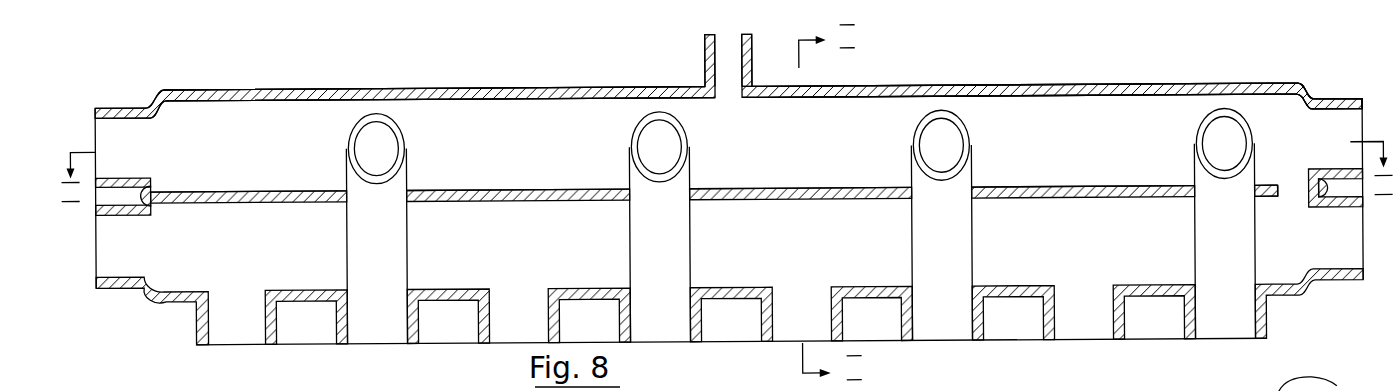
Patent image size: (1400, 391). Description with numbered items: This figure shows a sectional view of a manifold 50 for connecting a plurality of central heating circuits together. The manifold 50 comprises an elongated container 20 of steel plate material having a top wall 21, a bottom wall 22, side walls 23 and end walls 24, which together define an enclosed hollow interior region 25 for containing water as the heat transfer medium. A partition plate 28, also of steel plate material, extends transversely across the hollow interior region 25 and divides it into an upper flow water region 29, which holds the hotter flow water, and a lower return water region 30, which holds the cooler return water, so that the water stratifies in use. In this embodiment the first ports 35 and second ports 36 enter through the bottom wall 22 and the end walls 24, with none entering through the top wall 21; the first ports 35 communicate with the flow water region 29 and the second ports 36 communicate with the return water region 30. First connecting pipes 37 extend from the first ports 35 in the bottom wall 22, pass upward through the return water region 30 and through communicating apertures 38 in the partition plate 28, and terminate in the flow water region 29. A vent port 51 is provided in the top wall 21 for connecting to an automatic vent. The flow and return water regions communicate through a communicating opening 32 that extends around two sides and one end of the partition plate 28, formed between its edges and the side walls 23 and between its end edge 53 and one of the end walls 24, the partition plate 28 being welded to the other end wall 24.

The manifold 50 is at (1138, 68).
The elongated container 20 is at (877, 91).
The top wall 21 is at (950, 90).
The bottom wall 22 is at (1002, 292).
The side walls 23 is at (1097, 114).
The end walls 24 is at (138, 186).
The hollow interior region 25 is at (518, 117).
The partition plate 28 is at (763, 192).
The flow water region 29 is at (263, 133).
The return water region 30 is at (192, 265).
The communicating opening 32 is at (1295, 199).
The first ports 35 is at (95, 133).
The second ports 36 is at (103, 257).
The first connecting pipes 37 is at (393, 252).
The communicating apertures 38 is at (409, 192).
The vent port 51 is at (725, 66).
The end edge 53 is at (1278, 192).